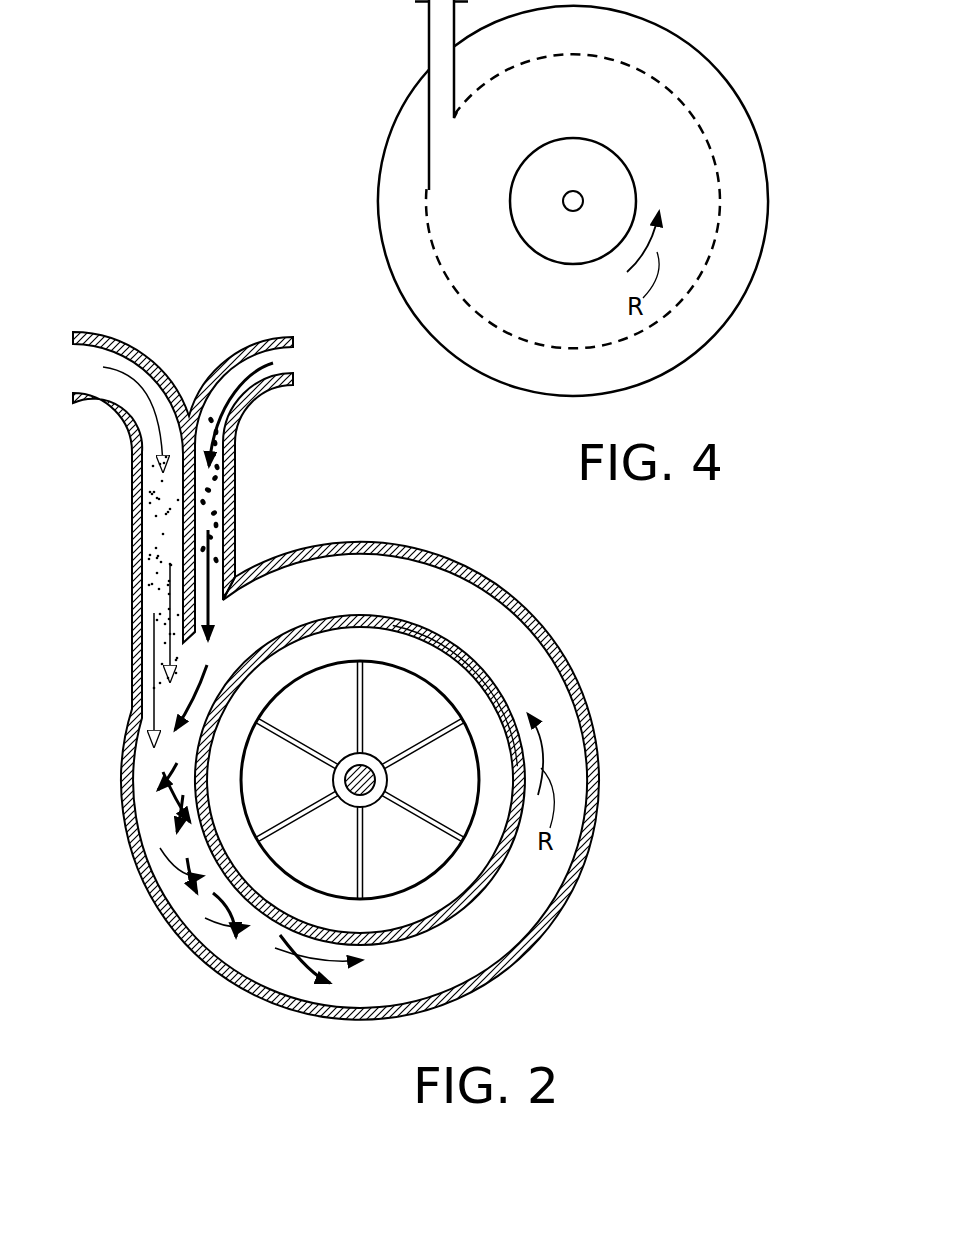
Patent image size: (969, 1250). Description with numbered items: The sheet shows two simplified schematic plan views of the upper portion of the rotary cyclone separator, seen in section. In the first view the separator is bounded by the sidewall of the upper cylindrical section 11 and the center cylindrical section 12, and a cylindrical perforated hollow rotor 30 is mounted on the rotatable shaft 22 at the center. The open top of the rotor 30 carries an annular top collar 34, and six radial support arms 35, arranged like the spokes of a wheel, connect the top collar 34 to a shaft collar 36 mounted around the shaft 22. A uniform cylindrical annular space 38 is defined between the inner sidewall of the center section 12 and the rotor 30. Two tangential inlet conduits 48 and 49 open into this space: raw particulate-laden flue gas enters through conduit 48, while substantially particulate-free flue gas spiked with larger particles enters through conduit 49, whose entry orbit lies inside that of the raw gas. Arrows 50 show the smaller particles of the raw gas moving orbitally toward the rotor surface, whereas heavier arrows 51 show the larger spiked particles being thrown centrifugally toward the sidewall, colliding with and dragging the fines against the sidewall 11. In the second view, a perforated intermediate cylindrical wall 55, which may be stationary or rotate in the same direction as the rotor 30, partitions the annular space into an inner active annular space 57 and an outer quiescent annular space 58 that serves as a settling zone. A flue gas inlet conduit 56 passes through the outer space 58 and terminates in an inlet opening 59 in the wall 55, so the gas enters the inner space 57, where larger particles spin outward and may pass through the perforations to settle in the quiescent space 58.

In FIG. 2, the upper cylindrical section 11 is at (395, 546).
In FIG. 4, the upper cylindrical section 11 is at (568, 211).
In FIG. 4, the center cylindrical section 12 is at (480, 378).
In FIG. 2, the rotatable shaft 22 is at (368, 764).
In FIG. 4, the rotatable shaft 22 is at (583, 193).
In FIG. 2, the cylindrical perforated hollow rotor 30 is at (415, 622).
In FIG. 4, the cylindrical perforated hollow rotor 30 is at (614, 155).
In FIG. 2, the annular top collar 34 is at (440, 869).
In FIG. 2, the radial support arms 35 is at (356, 726).
In FIG. 2, the shaft collar 36 is at (389, 778).
In FIG. 2, the cylindrical annular space 38 is at (505, 928).
In FIG. 2, the tangential inlet conduit 48 is at (132, 550).
In FIG. 2, the tangential inlet conduit 49 is at (236, 502).
In FIG. 2, the arrows 50 is at (130, 422).
In FIG. 2, the heavier arrows 51 is at (240, 417).
In FIG. 4, the perforated intermediate cylindrical wall 55 is at (477, 311).
In FIG. 4, the flue gas inlet conduit 56 is at (429, 32).
In FIG. 4, the inner annular space 57 is at (483, 259).
In FIG. 4, the outer annular space 58 is at (418, 239).
In FIG. 4, the inlet opening 59 is at (442, 128).